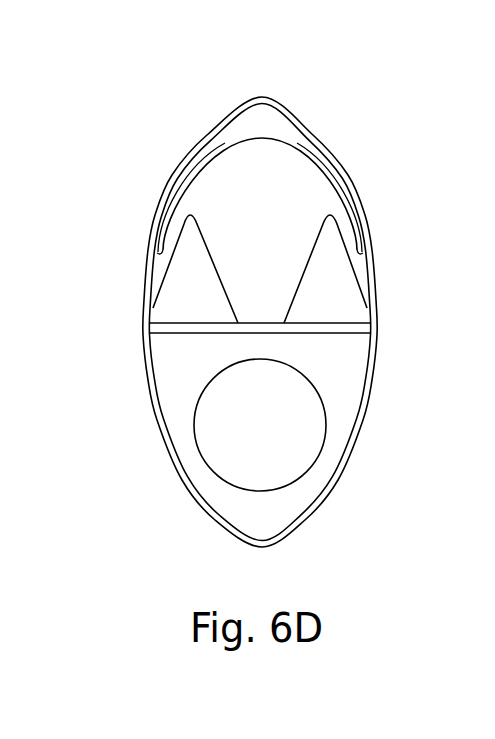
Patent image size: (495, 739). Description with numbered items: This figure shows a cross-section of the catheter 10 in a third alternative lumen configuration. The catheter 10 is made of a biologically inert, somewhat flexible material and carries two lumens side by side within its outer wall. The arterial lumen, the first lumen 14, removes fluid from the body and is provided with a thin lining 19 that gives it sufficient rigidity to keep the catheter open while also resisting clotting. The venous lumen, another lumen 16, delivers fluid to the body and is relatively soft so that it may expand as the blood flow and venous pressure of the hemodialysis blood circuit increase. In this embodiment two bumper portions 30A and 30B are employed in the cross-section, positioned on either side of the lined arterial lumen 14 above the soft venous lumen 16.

The catheter 10 is at (188, 102).
The first lumen 14 is at (176, 177).
The thin lining 19 is at (164, 249).
The bumper portion 30A is at (175, 291).
The bumper portion 30B is at (337, 292).
The another lumen 16 is at (211, 467).